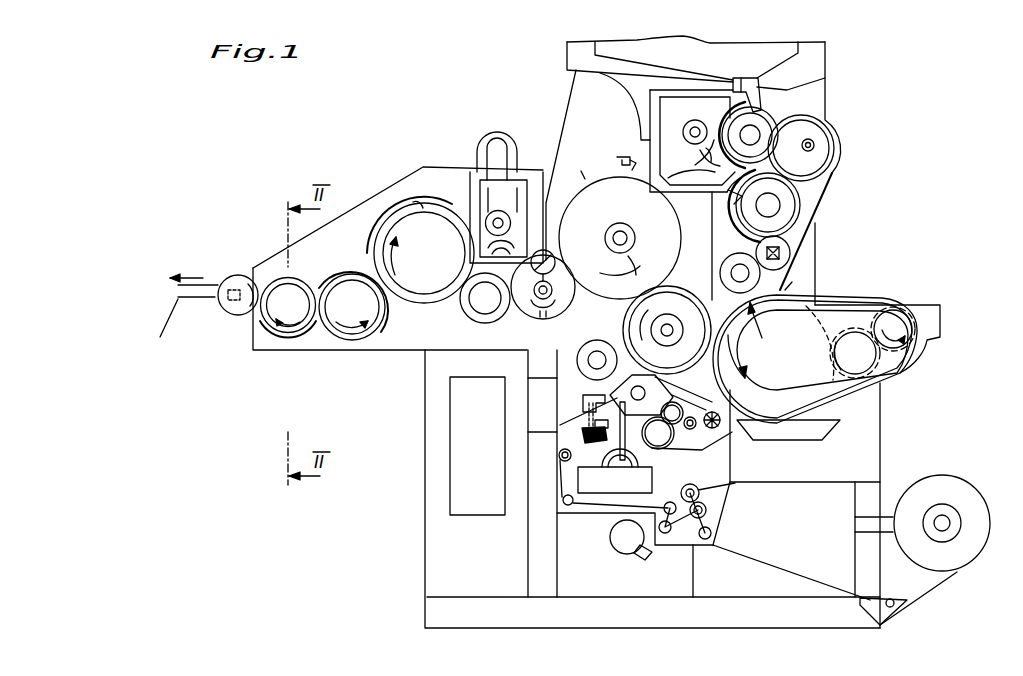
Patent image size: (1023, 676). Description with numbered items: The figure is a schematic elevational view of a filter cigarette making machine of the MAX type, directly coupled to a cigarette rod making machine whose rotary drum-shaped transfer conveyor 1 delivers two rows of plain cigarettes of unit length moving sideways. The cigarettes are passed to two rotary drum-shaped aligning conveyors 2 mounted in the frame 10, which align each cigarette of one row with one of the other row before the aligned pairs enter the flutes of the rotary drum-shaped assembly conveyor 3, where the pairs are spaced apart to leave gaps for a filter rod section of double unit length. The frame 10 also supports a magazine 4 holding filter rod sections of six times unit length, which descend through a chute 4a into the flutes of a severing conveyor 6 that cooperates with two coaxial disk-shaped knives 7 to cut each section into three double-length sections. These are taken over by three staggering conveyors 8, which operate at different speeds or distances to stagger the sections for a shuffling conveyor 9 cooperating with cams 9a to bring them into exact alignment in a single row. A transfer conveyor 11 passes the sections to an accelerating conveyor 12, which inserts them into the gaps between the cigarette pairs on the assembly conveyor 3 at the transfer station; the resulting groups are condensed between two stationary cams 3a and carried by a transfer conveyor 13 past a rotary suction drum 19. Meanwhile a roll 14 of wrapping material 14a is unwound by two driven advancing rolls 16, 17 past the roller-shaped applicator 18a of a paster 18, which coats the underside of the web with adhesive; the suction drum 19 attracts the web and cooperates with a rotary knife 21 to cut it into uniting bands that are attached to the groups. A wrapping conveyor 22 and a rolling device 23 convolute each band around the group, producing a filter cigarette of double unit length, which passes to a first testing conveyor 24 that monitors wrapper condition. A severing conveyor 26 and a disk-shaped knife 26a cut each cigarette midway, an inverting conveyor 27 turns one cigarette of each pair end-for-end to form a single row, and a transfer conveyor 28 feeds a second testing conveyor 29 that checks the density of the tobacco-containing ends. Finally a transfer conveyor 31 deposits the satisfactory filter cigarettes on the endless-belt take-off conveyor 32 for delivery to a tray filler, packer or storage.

The transfer conveyor 1 is at (903, 298).
The aligning conveyors 2 is at (877, 366).
The assembly conveyor 3 is at (790, 294).
The stationary cams 3a is at (712, 308).
The magazine 4 is at (760, 44).
The chute 4a is at (760, 78).
The severing conveyor 6 is at (762, 122).
The disk-shaped knives 7 is at (690, 166).
The staggering conveyors 8 is at (815, 148).
The shuffling conveyor 9 is at (790, 213).
The cam 9a is at (728, 200).
The frame 10 is at (602, 590).
The transfer conveyor 11 is at (792, 253).
The accelerating conveyor 12 is at (788, 290).
The transfer conveyor 13 is at (623, 311).
The roll 14 is at (950, 483).
The wrapping material 14a is at (783, 568).
The advancing roll 16 is at (705, 510).
The advancing roll 17 is at (697, 492).
The paster 18 is at (645, 448).
The applicator 18a is at (602, 460).
The suction drum 19 is at (600, 342).
The rotary knife 21 is at (705, 455).
The wrapping conveyor 22 is at (620, 238).
The rolling device 23 is at (712, 248).
The first testing conveyor 24 is at (522, 326).
The severing conveyor 26 is at (468, 320).
The disk-shaped knife 26a is at (513, 245).
The inverting conveyor 27 is at (408, 300).
The transfer conveyor 28 is at (350, 335).
The second testing conveyor 29 is at (292, 330).
The transfer conveyor 31 is at (232, 318).
The take-off conveyor 32 is at (185, 300).